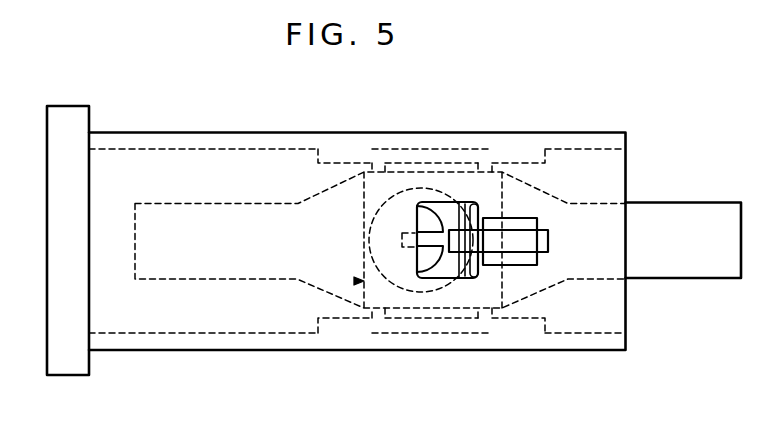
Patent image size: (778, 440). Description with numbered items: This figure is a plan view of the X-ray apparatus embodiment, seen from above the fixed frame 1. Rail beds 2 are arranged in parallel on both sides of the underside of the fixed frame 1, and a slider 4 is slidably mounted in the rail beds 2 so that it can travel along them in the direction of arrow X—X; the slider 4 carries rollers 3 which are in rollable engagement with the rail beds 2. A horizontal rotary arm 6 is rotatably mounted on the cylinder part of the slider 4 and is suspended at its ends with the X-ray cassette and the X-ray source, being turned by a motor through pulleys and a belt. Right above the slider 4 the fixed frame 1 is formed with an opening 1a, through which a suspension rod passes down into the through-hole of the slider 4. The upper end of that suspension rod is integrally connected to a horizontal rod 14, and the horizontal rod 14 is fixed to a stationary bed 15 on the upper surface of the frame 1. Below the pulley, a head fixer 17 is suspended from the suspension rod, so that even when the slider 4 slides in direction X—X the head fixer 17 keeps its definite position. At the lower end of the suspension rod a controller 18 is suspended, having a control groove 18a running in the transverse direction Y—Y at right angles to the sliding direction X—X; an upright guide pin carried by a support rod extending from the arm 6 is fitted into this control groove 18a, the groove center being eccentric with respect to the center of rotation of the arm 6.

The fixed frame 1 is at (197, 138).
The opening 1a is at (432, 273).
The rail bed 2 is at (332, 150).
The roller 3 is at (378, 163).
The slider 4 is at (356, 281).
The horizontal rotary arm 6 is at (655, 210).
The horizontal rod 14 is at (549, 243).
The stationary bed 15 is at (522, 265).
The head fixer 17 is at (423, 220).
The controller 18 is at (455, 268).
The control groove 18a is at (468, 202).